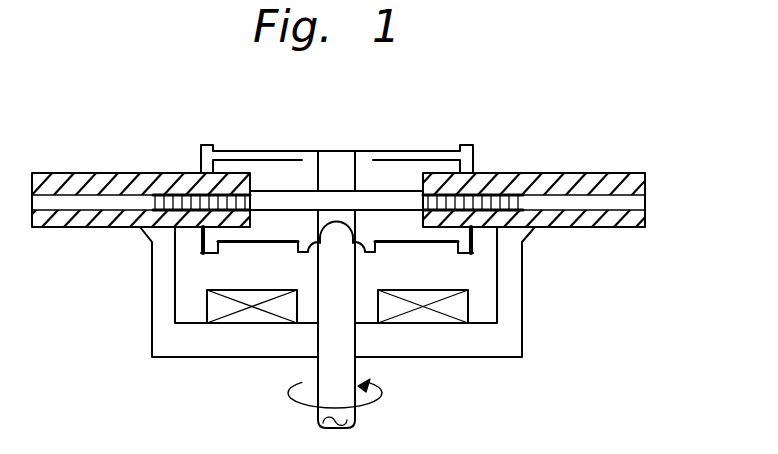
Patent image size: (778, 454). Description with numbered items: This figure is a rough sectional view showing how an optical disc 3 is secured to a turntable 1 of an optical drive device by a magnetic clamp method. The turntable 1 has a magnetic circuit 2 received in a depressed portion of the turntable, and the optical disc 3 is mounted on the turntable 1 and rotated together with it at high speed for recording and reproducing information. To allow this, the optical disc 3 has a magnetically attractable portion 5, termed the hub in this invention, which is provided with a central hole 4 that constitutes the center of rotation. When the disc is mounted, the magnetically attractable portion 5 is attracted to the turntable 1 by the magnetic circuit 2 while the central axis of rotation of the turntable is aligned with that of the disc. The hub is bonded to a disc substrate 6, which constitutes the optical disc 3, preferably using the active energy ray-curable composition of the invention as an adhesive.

The turntable 1 is at (512, 330).
The magnetic circuit 2 is at (464, 303).
The optical disc 3 is at (331, 161).
The central hole 4 is at (350, 143).
The magnetically attractable portion 5 is at (384, 224).
The disc substrate 6 is at (622, 170).